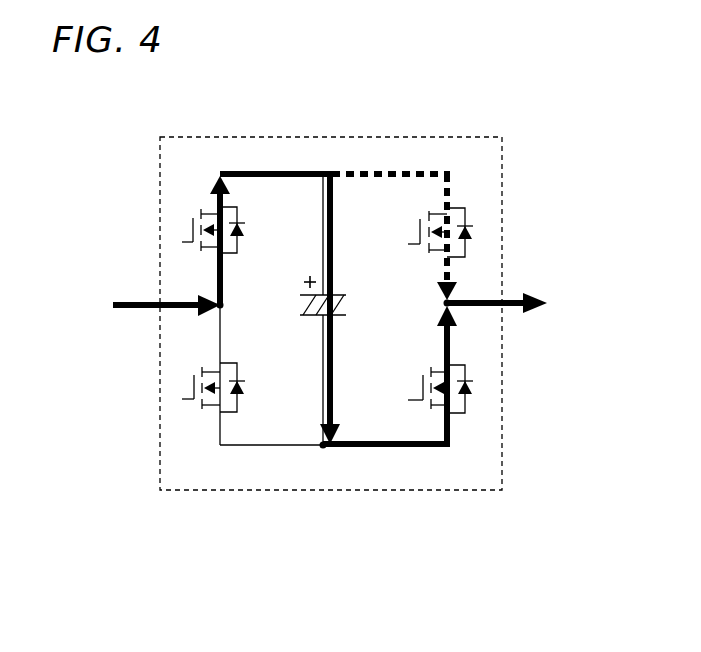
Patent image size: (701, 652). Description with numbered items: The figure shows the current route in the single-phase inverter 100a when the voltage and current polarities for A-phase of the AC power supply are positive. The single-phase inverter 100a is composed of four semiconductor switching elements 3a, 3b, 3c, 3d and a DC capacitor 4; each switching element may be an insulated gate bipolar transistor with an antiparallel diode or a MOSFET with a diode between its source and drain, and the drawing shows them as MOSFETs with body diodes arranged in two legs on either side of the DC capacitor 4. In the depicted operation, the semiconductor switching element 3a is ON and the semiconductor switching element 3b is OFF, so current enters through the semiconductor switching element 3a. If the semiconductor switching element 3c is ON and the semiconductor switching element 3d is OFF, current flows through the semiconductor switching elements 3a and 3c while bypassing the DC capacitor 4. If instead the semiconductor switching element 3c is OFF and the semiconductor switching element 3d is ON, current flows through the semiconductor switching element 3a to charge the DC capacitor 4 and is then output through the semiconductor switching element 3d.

The single-phase inverter 100a is at (398, 90).
The semiconductor switching element 3a is at (205, 205).
The semiconductor switching element 3b is at (188, 413).
The semiconductor switching element 3c is at (472, 213).
The semiconductor switching element 3d is at (462, 418).
The DC capacitor 4 is at (340, 293).